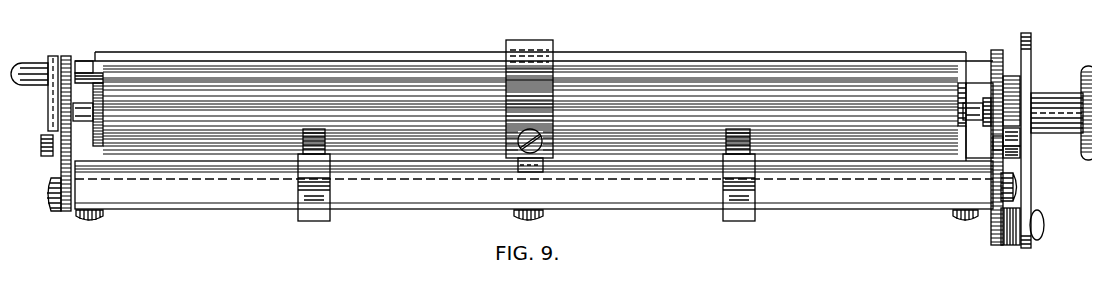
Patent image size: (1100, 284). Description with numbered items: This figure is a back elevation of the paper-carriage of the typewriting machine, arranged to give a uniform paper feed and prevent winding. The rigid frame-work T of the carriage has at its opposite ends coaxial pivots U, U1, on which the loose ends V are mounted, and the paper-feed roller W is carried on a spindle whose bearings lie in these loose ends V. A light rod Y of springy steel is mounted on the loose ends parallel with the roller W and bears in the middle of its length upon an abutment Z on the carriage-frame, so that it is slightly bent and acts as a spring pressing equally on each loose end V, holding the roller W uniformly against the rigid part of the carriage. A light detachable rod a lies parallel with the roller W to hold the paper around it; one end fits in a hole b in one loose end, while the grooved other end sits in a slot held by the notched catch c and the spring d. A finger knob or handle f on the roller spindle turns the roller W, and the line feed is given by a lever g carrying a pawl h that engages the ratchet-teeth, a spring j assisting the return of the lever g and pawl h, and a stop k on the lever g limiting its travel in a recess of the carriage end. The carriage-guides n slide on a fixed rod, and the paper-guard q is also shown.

The detachable rod a is at (17, 60).
The hole in loose carriage end b is at (995, 70).
The notched catch c is at (46, 50).
The spring d is at (43, 88).
The finger knob or handle f is at (1078, 151).
The lever g is at (1023, 54).
The pawl h is at (993, 130).
The spring j is at (998, 237).
The stop k is at (990, 142).
The carriage-guides n is at (318, 208).
The paper-guard q is at (505, 34).
The rigid frame-work of the carriage T is at (132, 188).
The coaxial pivot U is at (43, 182).
The coaxial pivot U1 is at (1006, 176).
The loose carriage end V is at (65, 106).
The paper-feed roller W is at (534, 106).
The light rod Y is at (281, 170).
The abutment Z is at (530, 168).